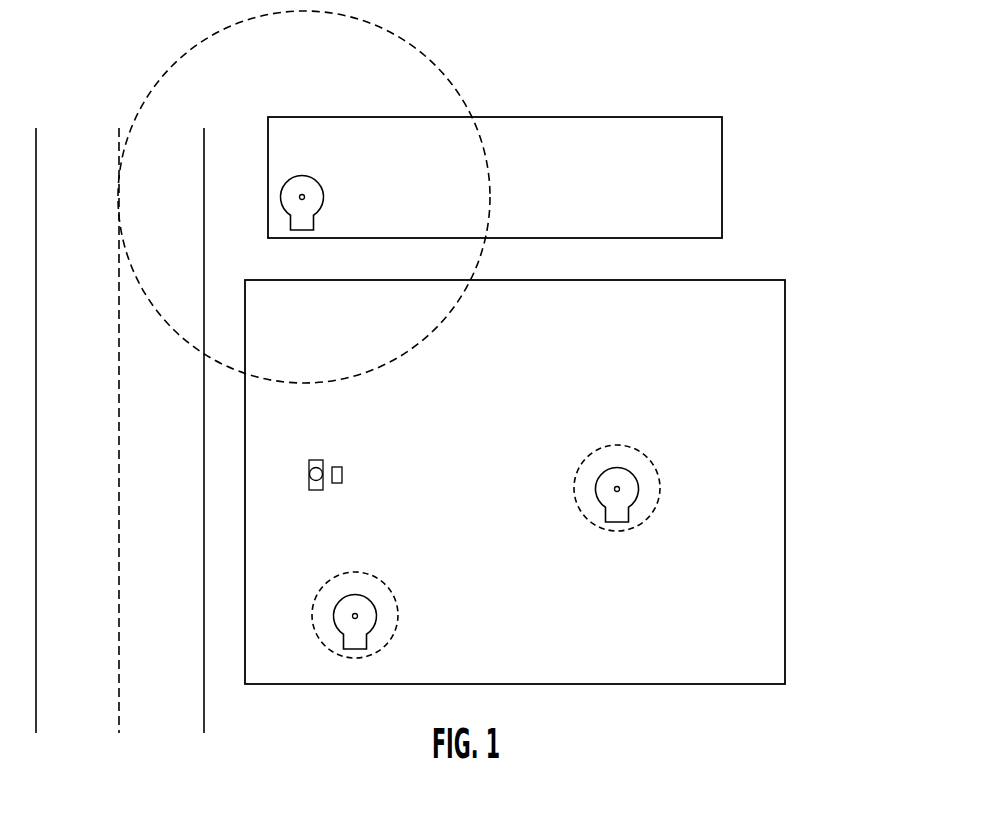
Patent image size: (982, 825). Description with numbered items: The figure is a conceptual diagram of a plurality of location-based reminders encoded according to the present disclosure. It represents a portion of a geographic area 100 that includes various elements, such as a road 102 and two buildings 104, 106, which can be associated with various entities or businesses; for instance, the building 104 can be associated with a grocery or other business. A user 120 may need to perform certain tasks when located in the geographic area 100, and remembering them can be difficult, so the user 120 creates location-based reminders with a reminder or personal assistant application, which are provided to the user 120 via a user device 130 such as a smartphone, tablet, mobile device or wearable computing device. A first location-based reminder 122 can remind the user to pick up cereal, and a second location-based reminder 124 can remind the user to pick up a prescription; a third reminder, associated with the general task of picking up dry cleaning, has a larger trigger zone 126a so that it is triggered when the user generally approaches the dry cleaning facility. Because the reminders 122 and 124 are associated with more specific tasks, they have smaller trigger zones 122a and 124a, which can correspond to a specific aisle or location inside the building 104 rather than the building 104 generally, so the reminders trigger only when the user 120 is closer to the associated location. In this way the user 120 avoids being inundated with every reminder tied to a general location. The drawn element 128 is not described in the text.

The geographic area 100 is at (770, 131).
The road 102 is at (190, 153).
The building 104 is at (498, 285).
The building 106 is at (580, 133).
The user 120 is at (316, 460).
The first location-based reminder 122 is at (377, 620).
The trigger zone 122a is at (378, 577).
The second location-based reminder 124 is at (635, 492).
The trigger zone 124a is at (640, 525).
The trigger zone 126a is at (440, 322).
The sprinkler head 128 is at (318, 200).
The user device 130 is at (343, 472).